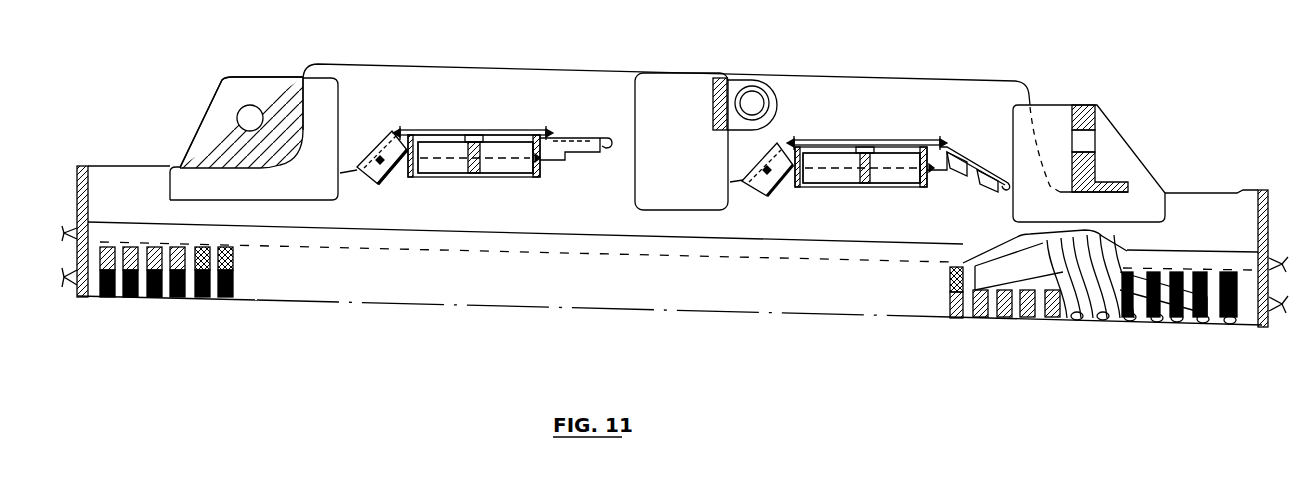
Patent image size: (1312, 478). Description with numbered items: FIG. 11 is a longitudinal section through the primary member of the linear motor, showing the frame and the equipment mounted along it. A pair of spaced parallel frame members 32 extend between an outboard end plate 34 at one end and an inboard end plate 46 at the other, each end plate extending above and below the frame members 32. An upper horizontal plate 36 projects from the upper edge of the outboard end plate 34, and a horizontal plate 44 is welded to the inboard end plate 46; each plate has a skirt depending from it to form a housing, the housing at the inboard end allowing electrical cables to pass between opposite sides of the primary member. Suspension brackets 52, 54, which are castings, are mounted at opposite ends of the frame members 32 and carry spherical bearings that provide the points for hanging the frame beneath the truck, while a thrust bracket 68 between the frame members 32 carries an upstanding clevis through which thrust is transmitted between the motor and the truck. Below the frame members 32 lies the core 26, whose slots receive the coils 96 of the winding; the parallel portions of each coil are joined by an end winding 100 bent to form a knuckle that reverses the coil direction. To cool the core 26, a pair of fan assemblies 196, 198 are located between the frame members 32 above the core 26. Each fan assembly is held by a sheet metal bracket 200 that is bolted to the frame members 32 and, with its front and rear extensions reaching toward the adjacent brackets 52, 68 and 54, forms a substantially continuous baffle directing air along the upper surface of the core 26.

The core 26 is at (340, 288).
The frame members 32 is at (500, 82).
The outboard end plate 34 is at (78, 173).
The upper horizontal plate 36 is at (70, 227).
The horizontal plate 44 is at (1284, 262).
The inboard end plate 46 is at (1258, 190).
The suspension bracket 52 is at (241, 72).
The suspension bracket 54 is at (1064, 100).
The thrust bracket 68 is at (706, 90).
The coils 96 is at (963, 318).
The end winding 100 is at (1060, 320).
The fan assembly 196 is at (429, 126).
The fan assembly 198 is at (858, 136).
The sheet metal bracket 200 is at (384, 178).